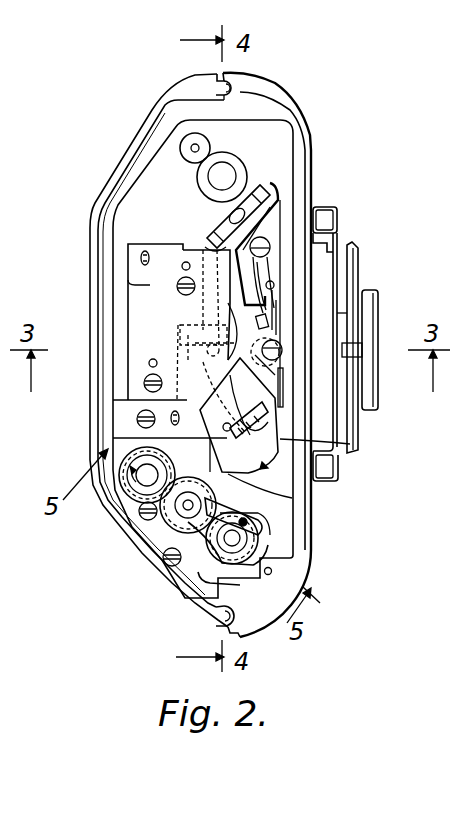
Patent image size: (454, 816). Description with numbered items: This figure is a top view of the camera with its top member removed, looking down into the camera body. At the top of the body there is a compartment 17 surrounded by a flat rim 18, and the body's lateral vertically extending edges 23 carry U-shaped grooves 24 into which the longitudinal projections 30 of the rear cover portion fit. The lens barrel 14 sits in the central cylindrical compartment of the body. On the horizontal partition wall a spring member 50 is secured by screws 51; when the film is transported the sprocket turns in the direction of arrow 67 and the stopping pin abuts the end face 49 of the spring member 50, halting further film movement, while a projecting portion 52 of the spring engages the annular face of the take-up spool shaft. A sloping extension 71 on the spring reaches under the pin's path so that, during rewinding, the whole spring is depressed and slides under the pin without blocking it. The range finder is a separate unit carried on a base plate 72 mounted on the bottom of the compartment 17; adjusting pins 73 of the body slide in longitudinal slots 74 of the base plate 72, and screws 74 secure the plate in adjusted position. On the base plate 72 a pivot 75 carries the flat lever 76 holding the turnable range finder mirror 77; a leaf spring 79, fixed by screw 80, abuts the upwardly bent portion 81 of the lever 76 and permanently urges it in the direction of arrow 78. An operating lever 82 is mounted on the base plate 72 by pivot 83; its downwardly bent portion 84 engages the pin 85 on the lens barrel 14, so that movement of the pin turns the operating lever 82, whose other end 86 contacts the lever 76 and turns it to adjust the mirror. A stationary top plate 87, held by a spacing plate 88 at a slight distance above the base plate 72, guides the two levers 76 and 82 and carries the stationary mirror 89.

The lens barrel 14 is at (140, 412).
The compartment 17 is at (280, 127).
The flat rim 18 is at (306, 155).
The lateral vertically extending edges 23 is at (218, 77).
The U-shaped grooves 24 is at (238, 93).
The longitudinal projections 30 is at (232, 82).
The end face 49 is at (257, 518).
The spring member 50 is at (198, 572).
The screws 51 is at (185, 533).
The projecting portion 52 is at (247, 527).
The arrow 67 is at (140, 500).
The sloping extension 71 is at (178, 527).
The base plate 72 is at (131, 244).
The adjusting pins 73 is at (137, 257).
The longitudinal slots 74 is at (280, 353).
The pivot 75 is at (250, 192).
The flat lever 76 is at (387, 512).
The turnable range finder mirror 77 is at (210, 235).
The arrow 78 is at (338, 478).
The leaf spring 79 is at (262, 268).
The screw 80 is at (262, 236).
The upwardly bent portion 81 is at (270, 323).
The operating lever 82 is at (130, 435).
The pivot 83 is at (268, 427).
The downwardly bent portion 84 is at (180, 327).
The pin 85 is at (178, 344).
The other end 86 is at (275, 458).
The stationary top plate 87 is at (140, 288).
The spacing plate 88 is at (147, 308).
The stationary mirror 89 is at (350, 444).